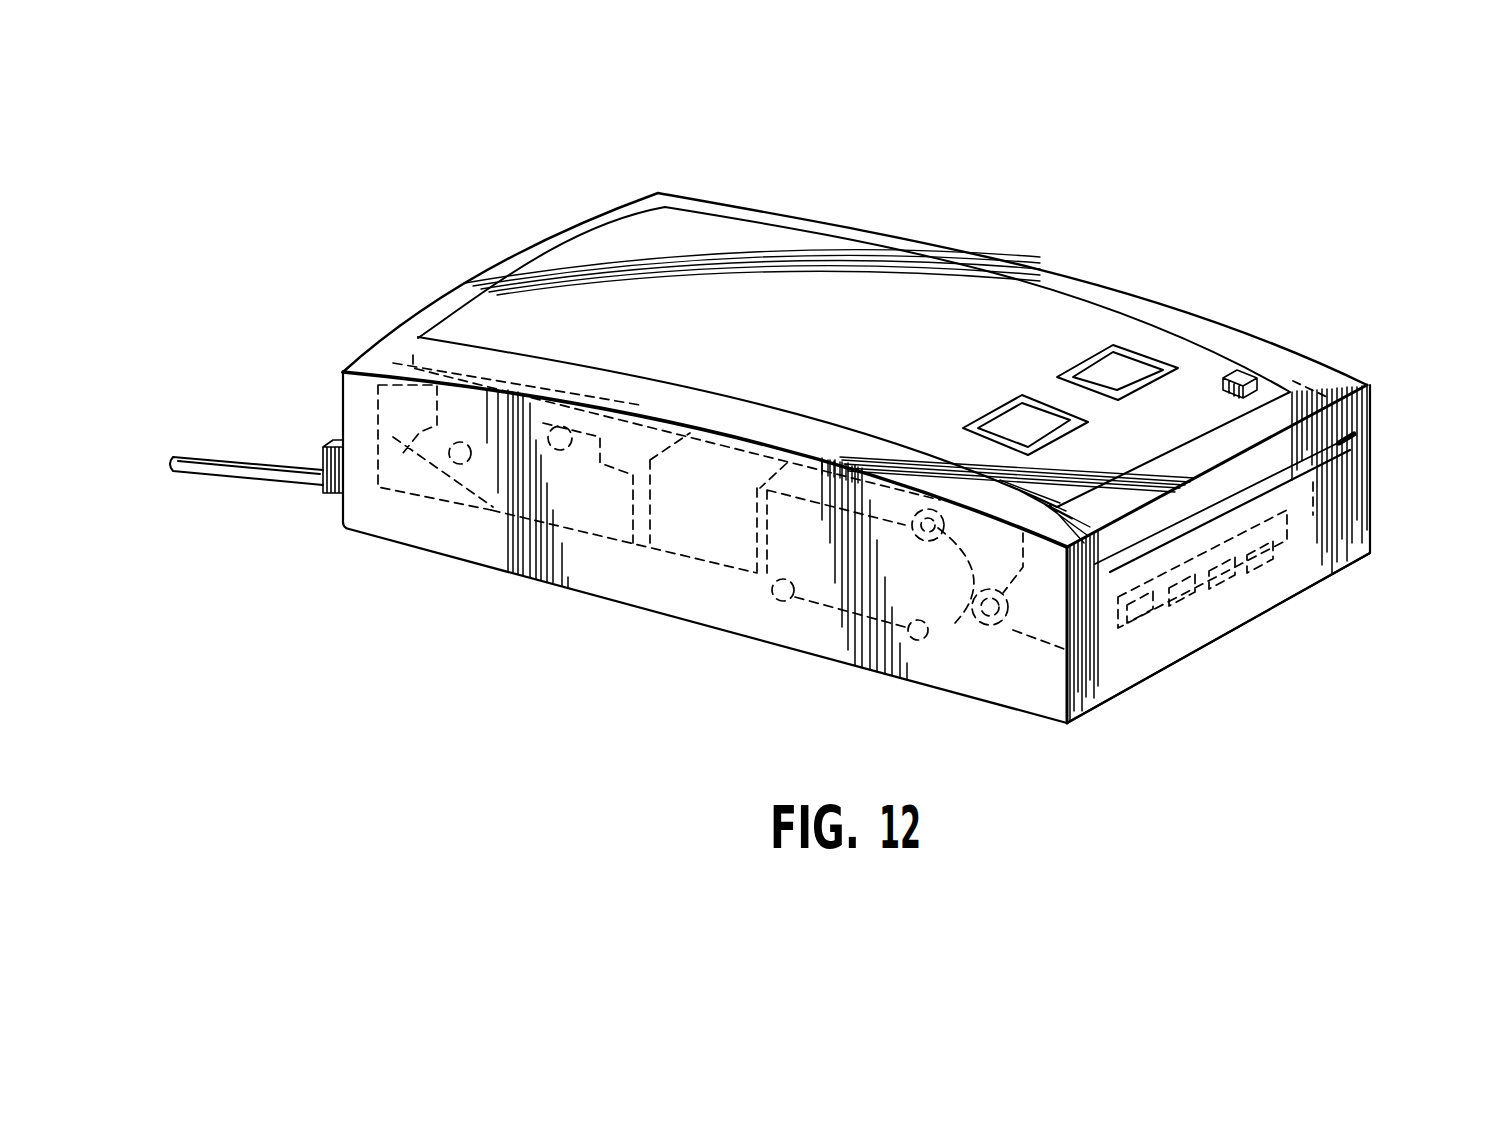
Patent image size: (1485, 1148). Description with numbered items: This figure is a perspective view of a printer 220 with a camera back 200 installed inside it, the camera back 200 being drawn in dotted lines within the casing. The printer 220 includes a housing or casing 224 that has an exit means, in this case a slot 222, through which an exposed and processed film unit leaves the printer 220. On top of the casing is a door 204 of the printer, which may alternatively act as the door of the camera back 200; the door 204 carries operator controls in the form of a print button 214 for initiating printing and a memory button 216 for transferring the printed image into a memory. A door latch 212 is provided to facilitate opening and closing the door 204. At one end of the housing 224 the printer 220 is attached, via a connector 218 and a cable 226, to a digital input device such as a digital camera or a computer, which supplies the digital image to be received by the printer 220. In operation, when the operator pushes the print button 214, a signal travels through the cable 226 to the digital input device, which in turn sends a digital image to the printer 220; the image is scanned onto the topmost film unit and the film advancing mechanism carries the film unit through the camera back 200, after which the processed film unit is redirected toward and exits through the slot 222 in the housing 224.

The camera back 200 is at (523, 531).
The door 204 is at (802, 240).
The door latch 212 is at (1247, 377).
The print button 214 is at (1017, 428).
The memory button 216 is at (1097, 372).
The connector 218 is at (323, 488).
The printer 220 is at (680, 642).
The slot 222 is at (1348, 440).
The housing 224 is at (1108, 700).
The cable 226 is at (257, 450).